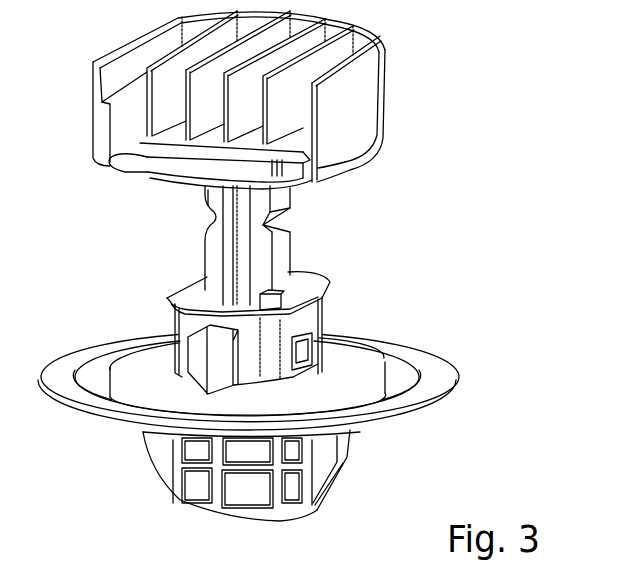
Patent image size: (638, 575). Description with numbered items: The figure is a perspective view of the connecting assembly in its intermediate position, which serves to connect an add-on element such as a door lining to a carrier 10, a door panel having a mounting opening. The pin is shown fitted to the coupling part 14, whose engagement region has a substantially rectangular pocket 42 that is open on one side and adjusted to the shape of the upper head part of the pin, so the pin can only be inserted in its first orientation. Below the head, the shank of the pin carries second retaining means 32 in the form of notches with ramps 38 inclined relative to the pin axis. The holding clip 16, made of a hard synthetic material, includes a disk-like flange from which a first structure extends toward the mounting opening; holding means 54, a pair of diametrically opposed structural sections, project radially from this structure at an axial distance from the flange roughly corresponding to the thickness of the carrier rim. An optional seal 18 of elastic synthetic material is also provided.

The carrier 10 is at (441, 346).
The coupling part 14 is at (398, 58).
The holding clip 16 is at (151, 468).
The seal 18 is at (350, 363).
The second retaining means 32 is at (196, 213).
The ramps 38 is at (290, 214).
The pocket 42 is at (130, 157).
The holding means 54 is at (348, 458).